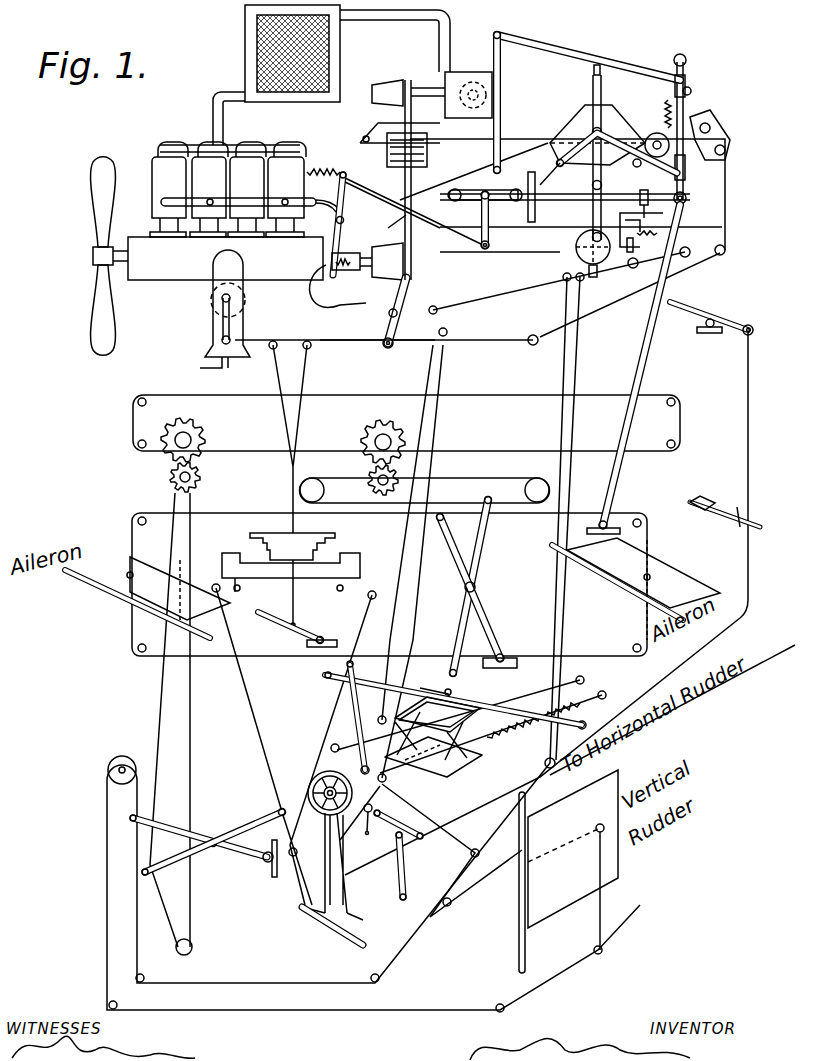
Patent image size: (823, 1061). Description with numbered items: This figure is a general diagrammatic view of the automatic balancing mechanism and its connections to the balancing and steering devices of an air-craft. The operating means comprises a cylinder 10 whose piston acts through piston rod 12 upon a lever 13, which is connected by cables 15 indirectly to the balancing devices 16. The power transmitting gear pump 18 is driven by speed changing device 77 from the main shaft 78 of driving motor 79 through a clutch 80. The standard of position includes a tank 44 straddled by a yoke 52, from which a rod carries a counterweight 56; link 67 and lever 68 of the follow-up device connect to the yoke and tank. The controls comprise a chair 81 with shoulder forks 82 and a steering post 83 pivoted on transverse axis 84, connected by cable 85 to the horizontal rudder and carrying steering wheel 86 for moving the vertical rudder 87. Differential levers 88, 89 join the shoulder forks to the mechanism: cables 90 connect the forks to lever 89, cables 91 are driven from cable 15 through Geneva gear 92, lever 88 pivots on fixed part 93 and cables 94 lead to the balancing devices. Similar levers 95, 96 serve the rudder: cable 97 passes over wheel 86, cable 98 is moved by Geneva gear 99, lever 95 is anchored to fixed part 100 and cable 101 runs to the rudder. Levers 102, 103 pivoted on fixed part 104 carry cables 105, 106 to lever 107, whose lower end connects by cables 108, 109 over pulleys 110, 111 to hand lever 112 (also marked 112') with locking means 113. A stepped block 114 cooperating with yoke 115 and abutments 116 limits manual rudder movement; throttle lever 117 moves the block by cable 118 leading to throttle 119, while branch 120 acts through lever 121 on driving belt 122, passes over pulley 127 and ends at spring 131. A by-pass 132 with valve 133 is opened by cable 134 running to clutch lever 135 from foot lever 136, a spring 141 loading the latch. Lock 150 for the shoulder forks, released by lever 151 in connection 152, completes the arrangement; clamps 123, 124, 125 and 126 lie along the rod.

The cylinder 10 is at (506, 202).
The piston rod 12 is at (583, 202).
The lever 13 is at (645, 366).
The cables 15 is at (601, 400).
The balancing devices 16 is at (110, 582).
The gear pump 18 is at (474, 72).
The tank 44 is at (578, 122).
The yoke 52 is at (593, 97).
The weight 56 is at (595, 272).
The link 67 is at (619, 68).
The lever 68 is at (640, 170).
The speed changing device 77 is at (404, 85).
The main shaft 78 is at (380, 296).
The driving motor 79 is at (234, 211).
The clutch 80 is at (340, 272).
The chair 81 is at (440, 767).
The shoulder forks 82 is at (460, 722).
The steering post 83 is at (350, 898).
The transverse axis 84 is at (333, 930).
The cable 85 is at (348, 880).
The steering wheel 86 is at (318, 780).
The vertical rudder 87 is at (568, 871).
The differential lever 88 is at (458, 560).
The differential lever 89 is at (482, 547).
The cables 90 is at (530, 652).
The cables 91 is at (425, 490).
The Geneva gear 92 is at (366, 440).
The fixed part 93 is at (503, 652).
The cables 94 is at (375, 542).
The differential lever 95 is at (165, 826).
The differential lever 96 is at (235, 828).
The cable 97 is at (366, 603).
The cable 98 is at (160, 880).
The Geneva gear 99 is at (178, 453).
The fixed part 100 is at (267, 868).
The cable 101 is at (256, 984).
The lever 102 is at (292, 860).
The lever 103 is at (408, 866).
The fixed part 104 is at (395, 810).
The cable 105 is at (560, 362).
The cable 106 is at (569, 362).
The lever 107 is at (652, 133).
The cable 108 is at (484, 292).
The cable 109 is at (506, 305).
The pulley 110 is at (446, 298).
The pulley 111 is at (447, 334).
The hand lever 112 is at (340, 727).
The cable end 112' is at (325, 699).
The locking means 113 is at (358, 750).
The stepped block 114 is at (338, 537).
The yoke 115 is at (243, 588).
The abutments 116 is at (361, 560).
The throttle lever 117 is at (280, 628).
The cable 118 is at (280, 358).
The throttle 119 is at (212, 302).
The branch cable 120 is at (343, 346).
The lever 121 is at (396, 300).
The driving belt 122 is at (383, 228).
The clamp 123 is at (687, 83).
The clamp 124 is at (690, 167).
The pin 125 is at (692, 92).
The pivot 126 is at (690, 196).
The pulley 127 is at (738, 115).
The spring 131 is at (666, 103).
The by-pass 132 is at (468, 190).
The valve 133 is at (500, 200).
The cable 134 is at (490, 248).
The clutch lever 135 is at (346, 212).
The foot lever 136 is at (722, 300).
The spring 141 is at (642, 249).
The lock 150 is at (513, 690).
The manually operable lever 151 is at (712, 502).
The connection 152 is at (747, 427).